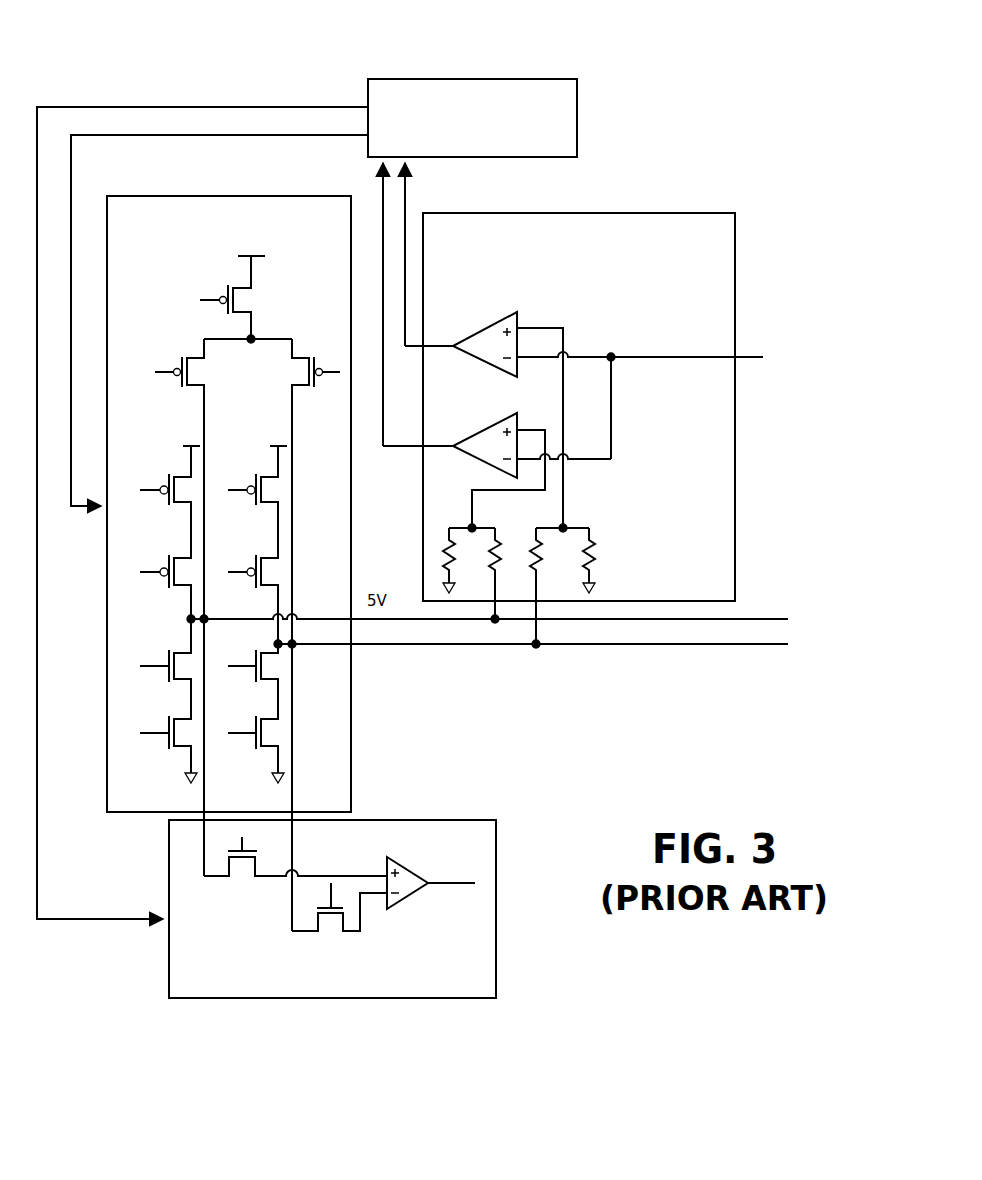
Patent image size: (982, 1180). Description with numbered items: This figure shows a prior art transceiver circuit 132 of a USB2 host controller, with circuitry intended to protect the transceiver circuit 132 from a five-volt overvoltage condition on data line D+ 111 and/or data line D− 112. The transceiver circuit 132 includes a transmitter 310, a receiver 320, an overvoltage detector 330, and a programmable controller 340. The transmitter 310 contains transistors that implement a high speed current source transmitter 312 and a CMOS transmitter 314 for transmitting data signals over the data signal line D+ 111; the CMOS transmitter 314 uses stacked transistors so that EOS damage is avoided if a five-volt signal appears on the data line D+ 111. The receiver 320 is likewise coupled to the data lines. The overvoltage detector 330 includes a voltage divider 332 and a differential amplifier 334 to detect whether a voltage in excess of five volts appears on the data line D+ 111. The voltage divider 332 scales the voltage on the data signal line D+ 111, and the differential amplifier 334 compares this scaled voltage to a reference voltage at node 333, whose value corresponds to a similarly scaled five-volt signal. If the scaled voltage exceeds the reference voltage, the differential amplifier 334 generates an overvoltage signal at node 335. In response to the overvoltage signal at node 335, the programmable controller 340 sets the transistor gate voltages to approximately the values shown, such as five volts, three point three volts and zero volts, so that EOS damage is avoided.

The transceiver circuit 132 is at (136, 62).
The transmitter 310 is at (258, 178).
The high speed current source transmitter 312 is at (172, 298).
The CMOS transmitter 314 is at (152, 451).
The receiver 320 is at (378, 818).
The overvoltage detector 330 is at (700, 213).
The voltage divider 332 is at (457, 513).
The node 333 is at (650, 359).
The differential amplifier 334 is at (488, 426).
The node 335 is at (408, 448).
The programmable controller 340 is at (566, 79).
The data line D+ 111 is at (745, 617).
The data line D− 112 is at (745, 646).